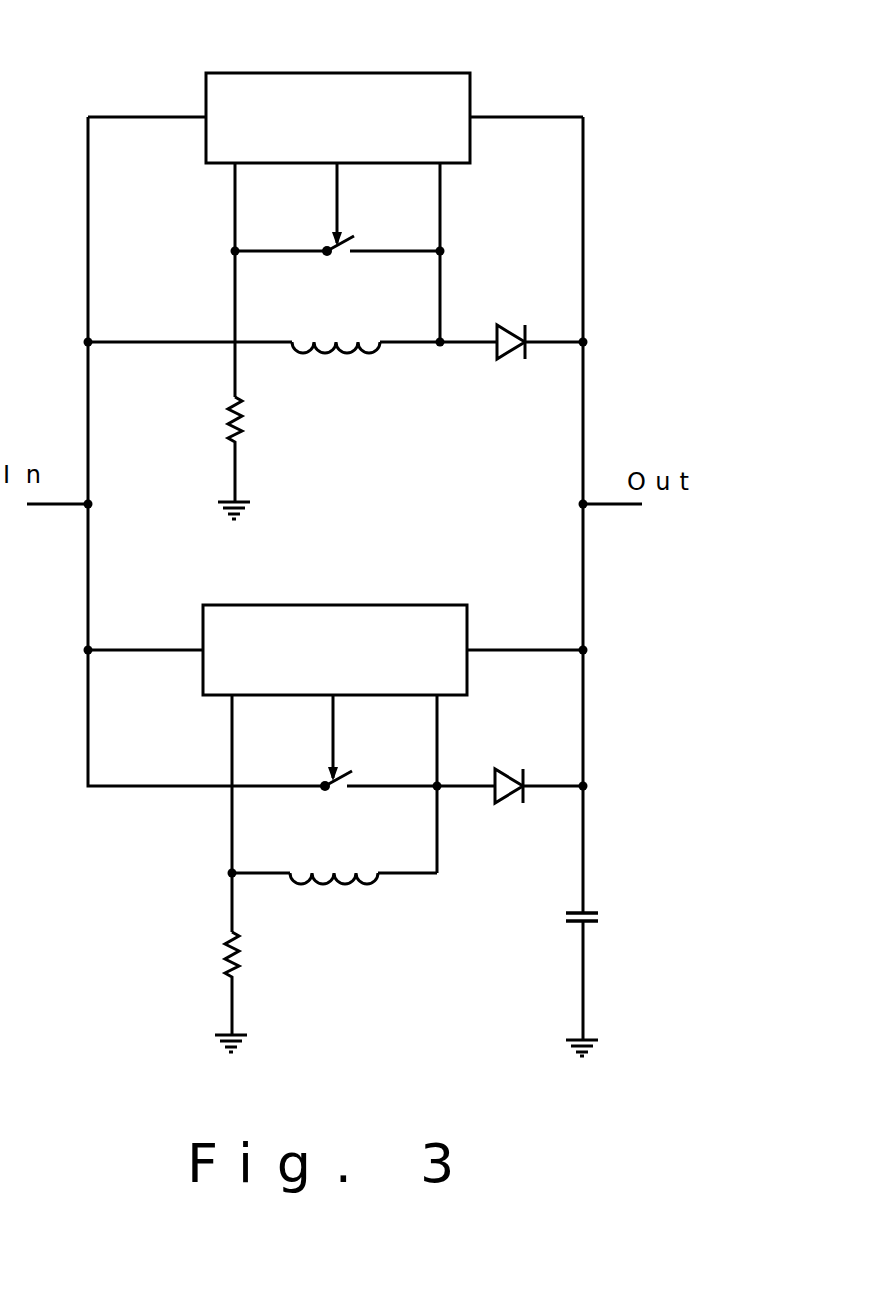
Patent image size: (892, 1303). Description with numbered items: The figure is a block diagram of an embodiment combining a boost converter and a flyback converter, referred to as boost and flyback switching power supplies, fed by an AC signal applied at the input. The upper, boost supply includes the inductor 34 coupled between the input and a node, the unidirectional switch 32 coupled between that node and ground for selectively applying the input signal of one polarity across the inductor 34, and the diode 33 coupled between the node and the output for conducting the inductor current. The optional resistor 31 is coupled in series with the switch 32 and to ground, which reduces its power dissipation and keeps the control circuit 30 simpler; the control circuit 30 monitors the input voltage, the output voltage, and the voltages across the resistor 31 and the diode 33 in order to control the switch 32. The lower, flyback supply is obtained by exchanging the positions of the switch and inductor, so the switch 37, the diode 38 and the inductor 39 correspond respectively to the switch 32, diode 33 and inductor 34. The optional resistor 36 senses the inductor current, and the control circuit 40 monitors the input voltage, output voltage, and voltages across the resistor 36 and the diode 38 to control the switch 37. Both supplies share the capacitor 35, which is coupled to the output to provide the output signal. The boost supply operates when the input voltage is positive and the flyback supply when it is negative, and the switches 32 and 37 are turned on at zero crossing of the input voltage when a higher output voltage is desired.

The control circuit 30 is at (381, 73).
The resistor 31 is at (228, 441).
The unidirectional switch 32 is at (323, 255).
The diode 33 is at (497, 358).
The inductor 34 is at (372, 355).
The capacitor 35 is at (595, 922).
The resistor 36 is at (228, 975).
The switch 37 is at (322, 788).
The diode 38 is at (497, 802).
The inductor 39 is at (368, 883).
The control circuit 40 is at (380, 607).